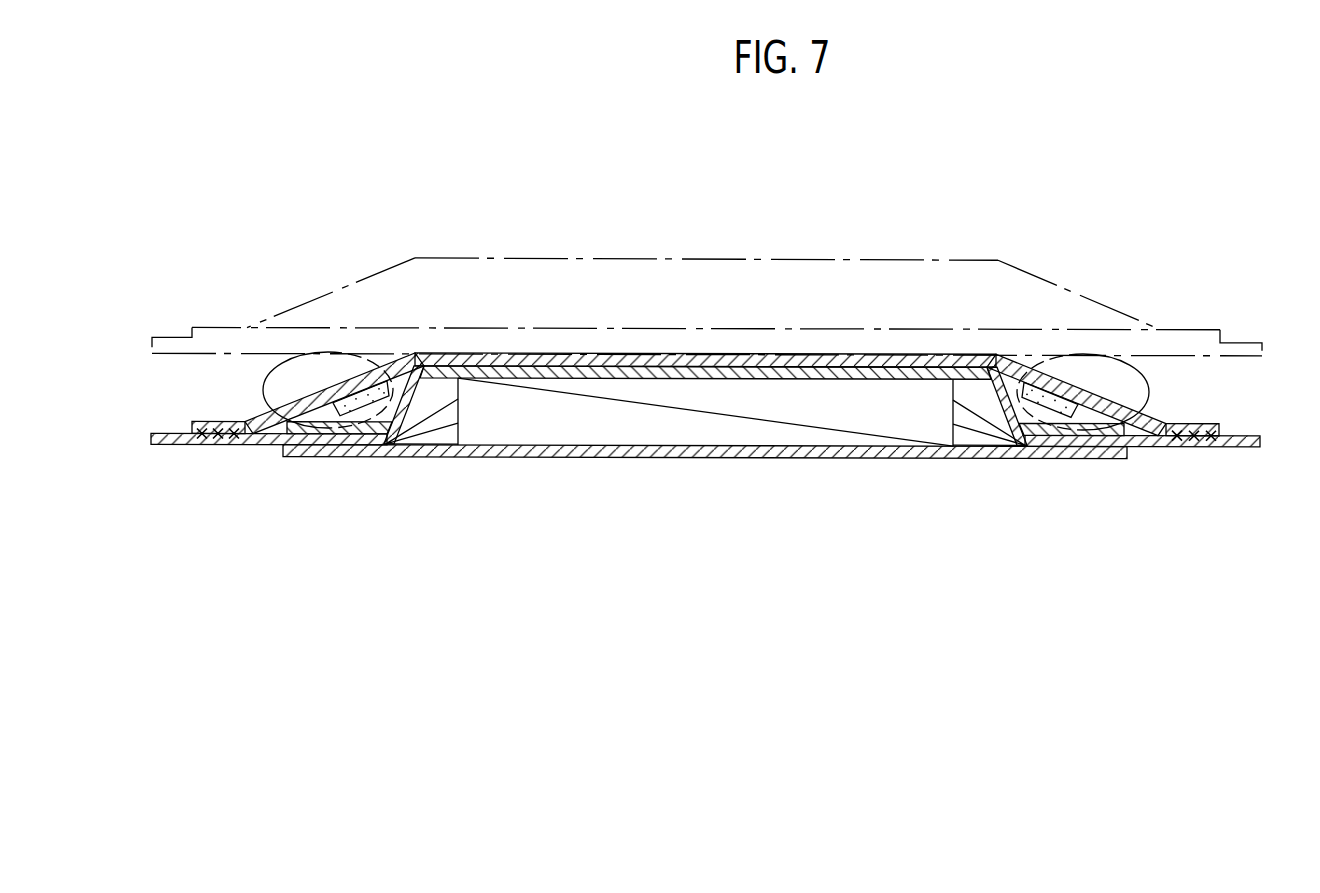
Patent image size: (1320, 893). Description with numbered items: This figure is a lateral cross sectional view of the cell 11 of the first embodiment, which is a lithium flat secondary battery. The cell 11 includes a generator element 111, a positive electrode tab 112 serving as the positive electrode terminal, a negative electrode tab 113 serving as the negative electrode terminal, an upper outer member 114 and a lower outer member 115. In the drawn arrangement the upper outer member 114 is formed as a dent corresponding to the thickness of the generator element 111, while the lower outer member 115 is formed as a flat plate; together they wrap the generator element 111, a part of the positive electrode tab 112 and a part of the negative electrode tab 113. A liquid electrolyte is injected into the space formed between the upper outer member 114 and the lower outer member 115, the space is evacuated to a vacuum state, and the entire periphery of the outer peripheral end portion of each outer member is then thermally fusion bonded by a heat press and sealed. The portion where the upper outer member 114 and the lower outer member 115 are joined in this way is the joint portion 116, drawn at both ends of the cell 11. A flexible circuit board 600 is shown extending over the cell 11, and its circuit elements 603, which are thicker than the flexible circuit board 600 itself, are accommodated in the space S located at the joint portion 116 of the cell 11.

The cell 11 is at (830, 258).
The flexible circuit board 600 is at (965, 355).
The circuit elements 603 is at (362, 392).
The space S is at (268, 398).
The generator element 111 is at (710, 427).
The positive electrode tab 112 is at (1199, 448).
The negative electrode tab 113 is at (188, 445).
The upper outer member 114 is at (575, 378).
The lower outer member 115 is at (845, 449).
The joint portion 116 is at (382, 462).